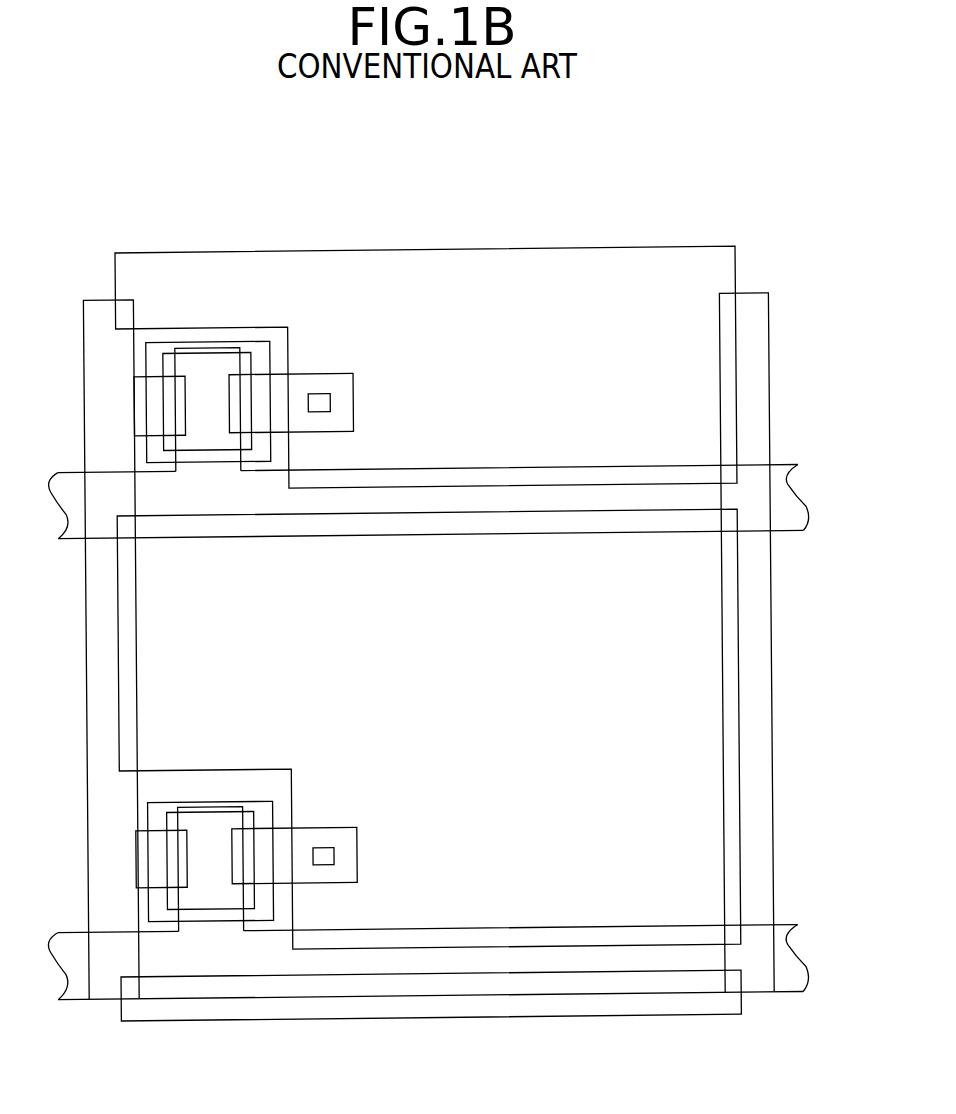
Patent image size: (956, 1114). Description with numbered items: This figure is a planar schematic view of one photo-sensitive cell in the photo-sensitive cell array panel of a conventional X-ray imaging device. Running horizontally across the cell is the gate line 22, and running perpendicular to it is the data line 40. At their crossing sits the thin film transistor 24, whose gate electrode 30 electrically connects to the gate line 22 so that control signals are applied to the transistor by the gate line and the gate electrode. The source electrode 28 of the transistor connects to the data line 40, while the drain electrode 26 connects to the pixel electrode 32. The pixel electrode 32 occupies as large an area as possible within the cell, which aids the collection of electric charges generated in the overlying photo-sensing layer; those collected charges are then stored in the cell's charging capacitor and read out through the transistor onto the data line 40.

The gate line 22 is at (786, 500).
The thin film transistor 24 is at (272, 809).
The drain electrode 26 is at (262, 871).
The source electrode 28 is at (155, 870).
The gate electrode 30 is at (197, 858).
The pixel electrode 32 is at (690, 770).
The data line 40 is at (100, 838).